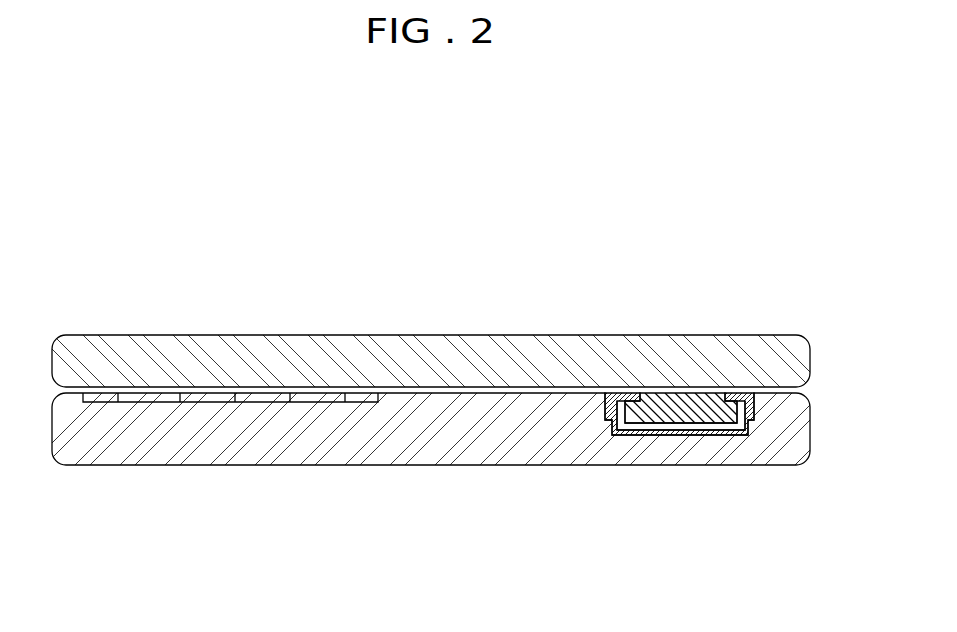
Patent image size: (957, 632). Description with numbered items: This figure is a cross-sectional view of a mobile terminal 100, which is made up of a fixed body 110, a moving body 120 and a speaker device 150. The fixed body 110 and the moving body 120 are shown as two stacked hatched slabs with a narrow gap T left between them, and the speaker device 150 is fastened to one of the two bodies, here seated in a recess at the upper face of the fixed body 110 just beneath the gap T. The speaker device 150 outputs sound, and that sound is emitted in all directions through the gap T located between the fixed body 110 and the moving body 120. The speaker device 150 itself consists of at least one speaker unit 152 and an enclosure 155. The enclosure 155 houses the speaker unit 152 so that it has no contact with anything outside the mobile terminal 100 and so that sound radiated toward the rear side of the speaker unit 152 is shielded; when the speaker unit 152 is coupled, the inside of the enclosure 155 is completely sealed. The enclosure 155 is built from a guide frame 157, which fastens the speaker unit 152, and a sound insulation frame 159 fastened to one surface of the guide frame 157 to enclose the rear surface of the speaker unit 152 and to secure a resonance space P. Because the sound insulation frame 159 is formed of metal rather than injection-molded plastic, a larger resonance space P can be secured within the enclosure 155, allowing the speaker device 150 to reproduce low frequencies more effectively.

The mobile terminal 100 is at (144, 207).
The fixed body 110 is at (456, 458).
The moving body 120 is at (294, 346).
The gap T is at (421, 388).
The resonance space P is at (634, 428).
The speaker device 150 is at (767, 593).
The speaker unit 152 is at (656, 418).
The enclosure 155 is at (812, 542).
The guide frame 157 is at (757, 412).
The sound insulation frame 159 is at (719, 427).